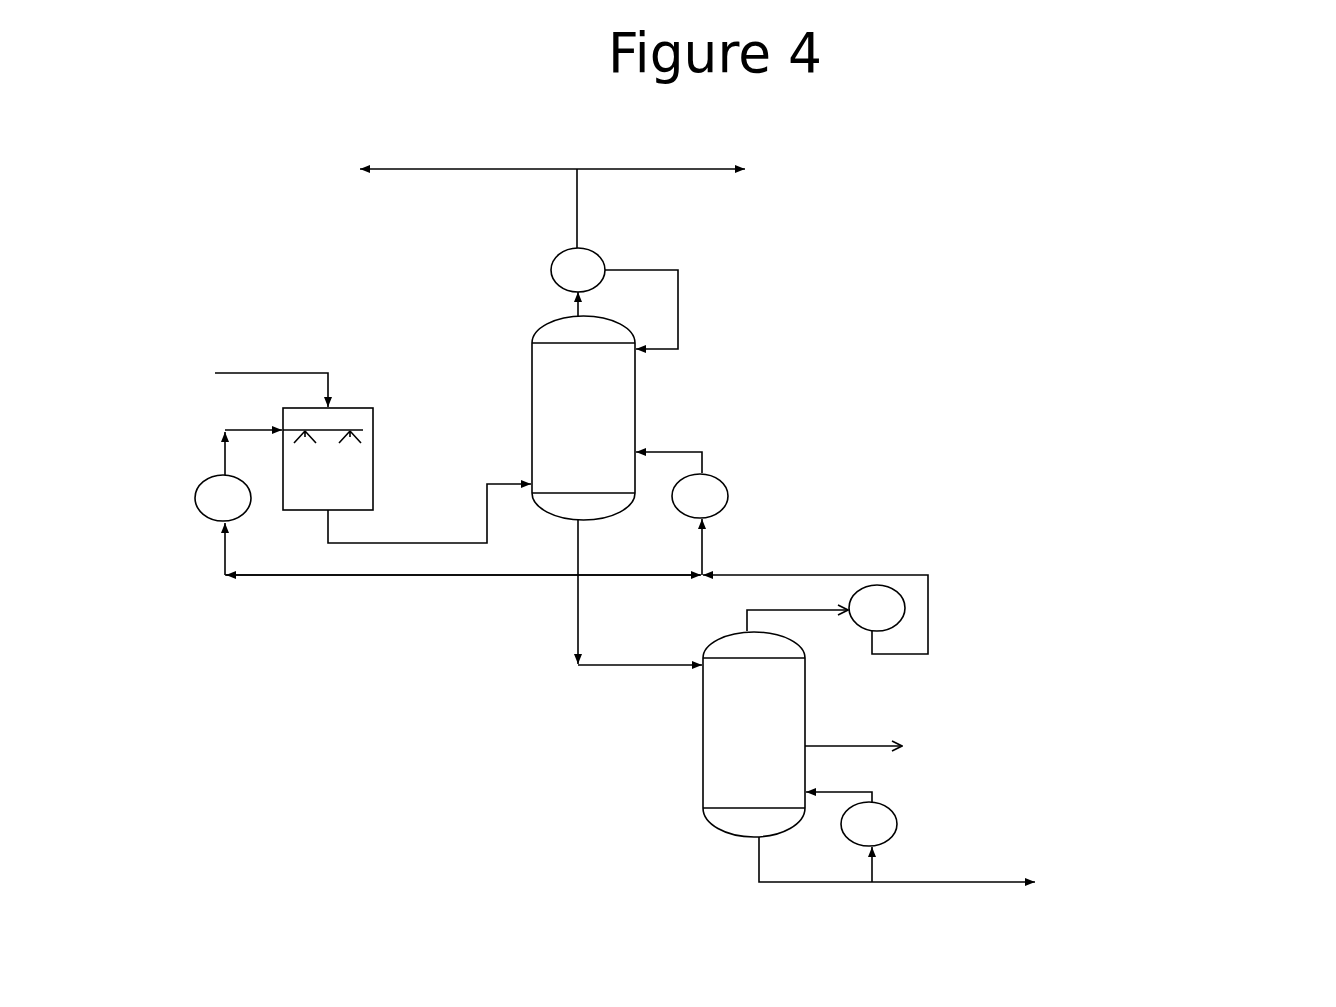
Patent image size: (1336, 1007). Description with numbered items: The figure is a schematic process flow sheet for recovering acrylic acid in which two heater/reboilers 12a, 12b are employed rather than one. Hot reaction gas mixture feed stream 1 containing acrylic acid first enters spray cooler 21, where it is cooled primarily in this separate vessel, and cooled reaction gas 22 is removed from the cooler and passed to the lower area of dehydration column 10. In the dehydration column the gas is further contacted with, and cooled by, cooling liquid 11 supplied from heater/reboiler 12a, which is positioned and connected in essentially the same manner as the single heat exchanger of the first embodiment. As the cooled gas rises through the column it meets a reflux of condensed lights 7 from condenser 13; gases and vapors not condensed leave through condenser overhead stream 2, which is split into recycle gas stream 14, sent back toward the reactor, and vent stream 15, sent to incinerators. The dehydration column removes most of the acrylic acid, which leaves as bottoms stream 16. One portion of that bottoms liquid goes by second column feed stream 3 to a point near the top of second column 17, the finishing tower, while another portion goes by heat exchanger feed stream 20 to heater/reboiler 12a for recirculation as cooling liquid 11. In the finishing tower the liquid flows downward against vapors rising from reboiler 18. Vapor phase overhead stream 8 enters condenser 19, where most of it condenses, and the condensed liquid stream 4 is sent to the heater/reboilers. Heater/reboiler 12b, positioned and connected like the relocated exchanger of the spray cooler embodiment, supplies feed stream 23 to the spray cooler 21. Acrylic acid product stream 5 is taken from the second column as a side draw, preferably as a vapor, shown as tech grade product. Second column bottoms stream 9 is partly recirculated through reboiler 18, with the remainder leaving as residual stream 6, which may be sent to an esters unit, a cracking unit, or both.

The reaction gas mixture feed stream 1 is at (221, 368).
The condenser overhead stream 2 is at (593, 208).
The second column feed stream 3 is at (640, 649).
The condensed liquid stream 4 is at (815, 596).
The acrylic acid product stream 5 is at (926, 736).
The residual stream 6 is at (1080, 864).
The condensed lights 7 is at (762, 309).
The vapor phase overhead stream 8 is at (797, 632).
The second column bottoms stream 9 is at (794, 859).
The dehydration column 10 is at (709, 418).
The cooling liquid 11 is at (694, 447).
The heater/reboiler 12a is at (820, 496).
The heater/reboiler 12b is at (261, 533).
The condenser 13 is at (484, 282).
The recycle gas stream 14 is at (436, 183).
The vent stream 15 is at (737, 159).
The bottoms stream 16 is at (546, 592).
The second column 17 is at (645, 734).
The reboiler 18 is at (921, 837).
The condenser 19 is at (977, 609).
The heat exchanger feed stream 20 is at (663, 547).
The spray cooler 21 is at (389, 441).
The cooled reaction gas 22 is at (429, 515).
The feed stream to spray cooler 23 is at (463, 549).